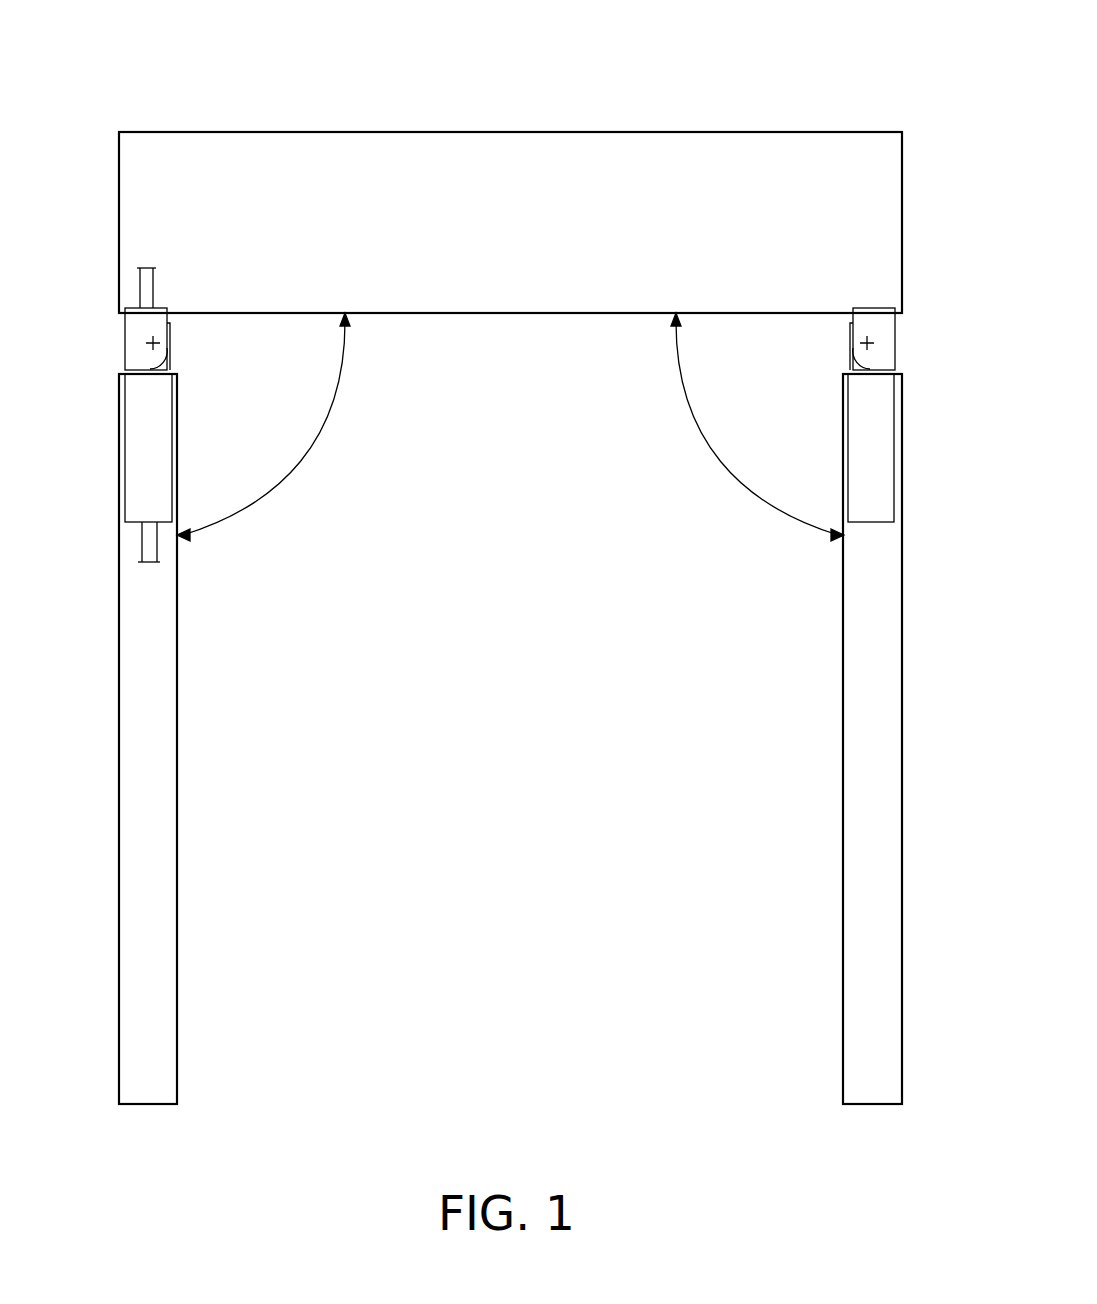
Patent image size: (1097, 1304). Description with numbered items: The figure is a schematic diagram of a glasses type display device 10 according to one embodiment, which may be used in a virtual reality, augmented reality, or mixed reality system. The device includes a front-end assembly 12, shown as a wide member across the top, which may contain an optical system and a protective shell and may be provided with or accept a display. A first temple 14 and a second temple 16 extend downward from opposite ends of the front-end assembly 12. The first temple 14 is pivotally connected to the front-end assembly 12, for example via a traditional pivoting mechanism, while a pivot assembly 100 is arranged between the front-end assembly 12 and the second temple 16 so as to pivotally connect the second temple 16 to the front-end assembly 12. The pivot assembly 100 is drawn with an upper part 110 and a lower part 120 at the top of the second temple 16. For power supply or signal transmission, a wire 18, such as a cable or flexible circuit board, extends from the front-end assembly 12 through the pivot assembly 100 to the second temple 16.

The glasses type display device 10 is at (823, 75).
The front-end assembly 12 is at (503, 158).
The first temple 14 is at (875, 835).
The second temple 16 is at (145, 833).
The wire 18 is at (147, 288).
The pivot assembly 100 is at (151, 393).
The hinge block 110 is at (138, 341).
The hinge body 120 is at (143, 458).